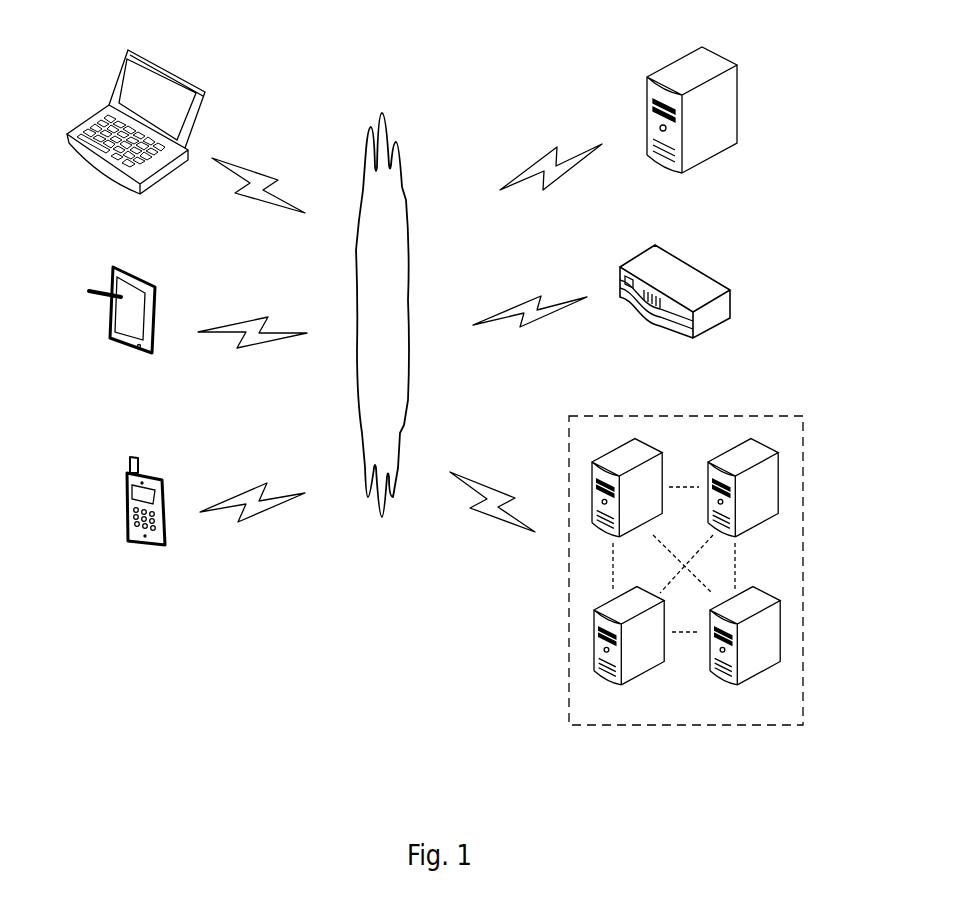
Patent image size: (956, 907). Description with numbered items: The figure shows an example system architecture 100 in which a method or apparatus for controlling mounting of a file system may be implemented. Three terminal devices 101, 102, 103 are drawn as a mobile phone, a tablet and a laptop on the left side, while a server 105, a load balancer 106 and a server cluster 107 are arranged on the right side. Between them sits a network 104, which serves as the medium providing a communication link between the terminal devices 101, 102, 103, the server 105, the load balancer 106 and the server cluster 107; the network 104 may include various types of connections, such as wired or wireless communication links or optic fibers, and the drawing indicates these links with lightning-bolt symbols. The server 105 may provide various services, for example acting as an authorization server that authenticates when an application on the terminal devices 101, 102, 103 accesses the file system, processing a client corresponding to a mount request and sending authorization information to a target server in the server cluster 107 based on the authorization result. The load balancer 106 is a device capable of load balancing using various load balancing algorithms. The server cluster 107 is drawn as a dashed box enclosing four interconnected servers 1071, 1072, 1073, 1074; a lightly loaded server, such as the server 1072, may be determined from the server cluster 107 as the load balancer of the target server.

The system architecture 100 is at (797, 24).
The terminal device 101 is at (146, 521).
The terminal device 102 is at (122, 330).
The terminal device 103 is at (136, 137).
The network 104 is at (382, 315).
The server 105 is at (692, 129).
The load balancer 106 is at (675, 309).
The server cluster 107 is at (686, 592).
The server 1071 is at (629, 508).
The server 1072 is at (751, 505).
The server 1073 is at (629, 654).
The server 1074 is at (745, 654).